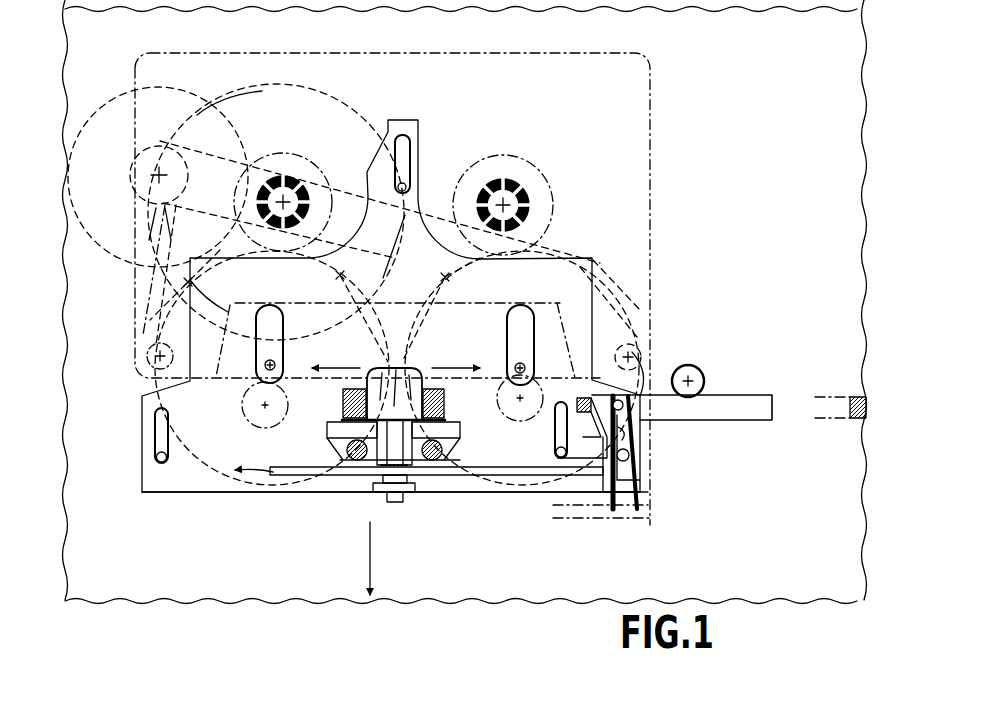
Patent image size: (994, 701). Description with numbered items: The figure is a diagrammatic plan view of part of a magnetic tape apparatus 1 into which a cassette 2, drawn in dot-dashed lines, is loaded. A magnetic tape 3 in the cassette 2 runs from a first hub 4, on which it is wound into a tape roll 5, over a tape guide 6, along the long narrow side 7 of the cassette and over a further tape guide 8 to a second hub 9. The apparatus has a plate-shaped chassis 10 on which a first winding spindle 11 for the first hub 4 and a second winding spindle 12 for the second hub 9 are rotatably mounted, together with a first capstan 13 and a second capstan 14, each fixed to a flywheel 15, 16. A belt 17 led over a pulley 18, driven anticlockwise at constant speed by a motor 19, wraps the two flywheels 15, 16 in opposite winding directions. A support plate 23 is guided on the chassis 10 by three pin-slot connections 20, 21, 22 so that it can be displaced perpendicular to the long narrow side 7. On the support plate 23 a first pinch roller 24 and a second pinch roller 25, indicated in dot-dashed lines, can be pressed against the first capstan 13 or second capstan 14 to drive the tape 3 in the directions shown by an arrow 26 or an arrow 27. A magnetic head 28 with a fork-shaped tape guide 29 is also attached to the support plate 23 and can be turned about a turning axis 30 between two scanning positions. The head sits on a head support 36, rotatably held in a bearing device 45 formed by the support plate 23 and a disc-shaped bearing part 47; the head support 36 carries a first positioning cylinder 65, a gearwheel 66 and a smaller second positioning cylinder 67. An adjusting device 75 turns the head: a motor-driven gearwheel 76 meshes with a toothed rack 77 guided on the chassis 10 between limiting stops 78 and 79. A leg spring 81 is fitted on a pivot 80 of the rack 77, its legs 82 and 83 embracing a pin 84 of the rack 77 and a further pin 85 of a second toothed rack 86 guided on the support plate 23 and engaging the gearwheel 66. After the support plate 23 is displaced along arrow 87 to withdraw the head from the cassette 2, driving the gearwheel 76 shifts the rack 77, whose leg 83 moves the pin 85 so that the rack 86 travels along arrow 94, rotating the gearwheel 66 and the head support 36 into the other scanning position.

The magnetic tape apparatus 1 is at (158, 620).
The cassette 2 is at (654, 127).
The magnetic tape 3 is at (571, 226).
The first hub 4 is at (247, 167).
The tape roll 5 is at (305, 88).
The tape guide 6 is at (168, 346).
The long narrow side of the cassette 7 is at (222, 385).
The further tape guide 8 is at (616, 349).
The second hub 9 is at (481, 160).
The chassis 10 is at (247, 597).
The first winding spindle 11 is at (291, 182).
The second winding spindle 12 is at (515, 183).
The first capstan 13 is at (520, 362).
The second capstan 14 is at (270, 360).
The flywheel 15 is at (443, 274).
The flywheel 16 is at (342, 272).
The belt 17 is at (193, 220).
The pulley 18 is at (157, 140).
The motor 19 is at (100, 107).
The pin-slot connection 20 is at (161, 470).
The pin-slot connection 21 is at (403, 137).
The pin-slot connection 22 is at (553, 462).
The support plate 23 is at (208, 494).
The first pinch roller 24 is at (533, 421).
The second pinch roller 25 is at (253, 425).
The arrow (tape-running direction) 26 is at (444, 363).
The arrow (tape-running direction) 27 is at (342, 363).
The magnetic head 28 is at (392, 373).
The fork-shaped tape guide 29 is at (416, 369).
The turning axis 30 is at (393, 513).
The head support 36 is at (490, 408).
The bearing device 45 is at (464, 436).
The bearing part 47 is at (327, 432).
The first positioning cylinder 65 is at (385, 470).
The gearwheel 66 is at (416, 488).
The second positioning cylinder 67 is at (397, 503).
The adjusting device 75 is at (735, 383).
The gearwheel 76 is at (698, 366).
The toothed rack 77 is at (730, 420).
The limiting stop 78 is at (586, 414).
The limiting stop 79 is at (855, 420).
The pivot 80 is at (624, 408).
The leg spring 81 is at (672, 353).
The leg 82 is at (622, 513).
The leg 83 is at (638, 498).
The pin 84 is at (630, 456).
The further pin 85 is at (634, 472).
The toothed rack 86 is at (452, 481).
The arrow 87 is at (369, 573).
The arrow 94 is at (262, 478).